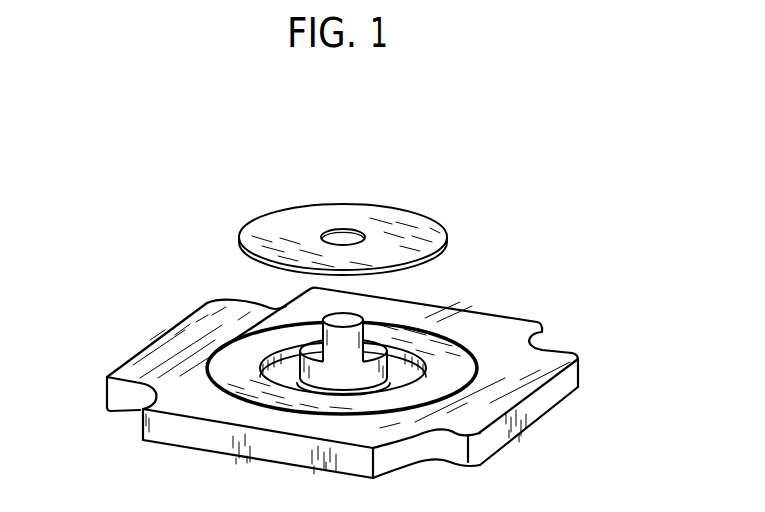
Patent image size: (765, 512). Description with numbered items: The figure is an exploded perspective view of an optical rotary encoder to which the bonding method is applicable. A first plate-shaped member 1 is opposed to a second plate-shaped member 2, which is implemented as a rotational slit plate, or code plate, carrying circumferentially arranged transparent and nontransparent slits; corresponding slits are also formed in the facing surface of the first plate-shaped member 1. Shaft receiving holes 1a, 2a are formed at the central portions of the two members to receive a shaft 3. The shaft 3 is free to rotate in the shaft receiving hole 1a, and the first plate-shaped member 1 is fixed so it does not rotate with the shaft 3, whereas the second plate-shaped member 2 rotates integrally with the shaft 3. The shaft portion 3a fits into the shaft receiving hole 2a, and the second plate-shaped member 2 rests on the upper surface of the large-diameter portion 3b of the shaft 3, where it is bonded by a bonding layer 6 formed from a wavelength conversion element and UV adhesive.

The first plate-shaped member 1 is at (502, 405).
The shaft receiving hole 1a is at (392, 348).
The second plate-shaped member 2 is at (361, 205).
The shaft receiving hole 2a is at (344, 237).
The shaft 3 is at (201, 308).
The shaft portion 3a is at (333, 343).
The large-diameter portion 3b is at (320, 370).
The bonding layer 6 is at (368, 345).